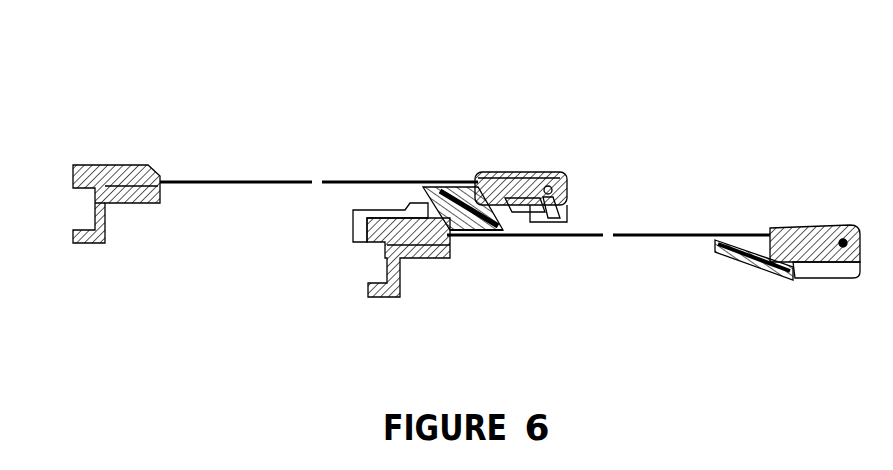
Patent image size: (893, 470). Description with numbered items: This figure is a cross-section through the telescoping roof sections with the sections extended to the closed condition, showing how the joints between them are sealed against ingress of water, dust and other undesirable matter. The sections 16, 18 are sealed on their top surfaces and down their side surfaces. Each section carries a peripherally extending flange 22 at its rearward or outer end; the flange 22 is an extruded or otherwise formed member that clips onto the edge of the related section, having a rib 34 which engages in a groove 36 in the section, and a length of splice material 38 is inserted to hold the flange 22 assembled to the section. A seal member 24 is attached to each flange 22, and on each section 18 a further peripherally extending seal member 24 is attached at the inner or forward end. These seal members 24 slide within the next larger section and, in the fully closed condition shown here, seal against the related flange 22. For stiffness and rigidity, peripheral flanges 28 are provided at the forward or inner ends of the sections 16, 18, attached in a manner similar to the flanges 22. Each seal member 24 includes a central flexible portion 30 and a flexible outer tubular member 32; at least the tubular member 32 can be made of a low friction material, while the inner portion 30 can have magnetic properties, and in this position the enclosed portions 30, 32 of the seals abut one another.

The section 16 is at (355, 181).
The section 18 is at (687, 235).
The peripherally extending flange 22 is at (538, 170).
The seal member 24 is at (352, 228).
The peripheral flange 28 is at (97, 243).
The central flexible portion 30 is at (430, 192).
The flexible outer tubular member 32 is at (353, 208).
The rib 34 is at (512, 173).
The groove 36 is at (537, 218).
The splice material 38 is at (520, 213).